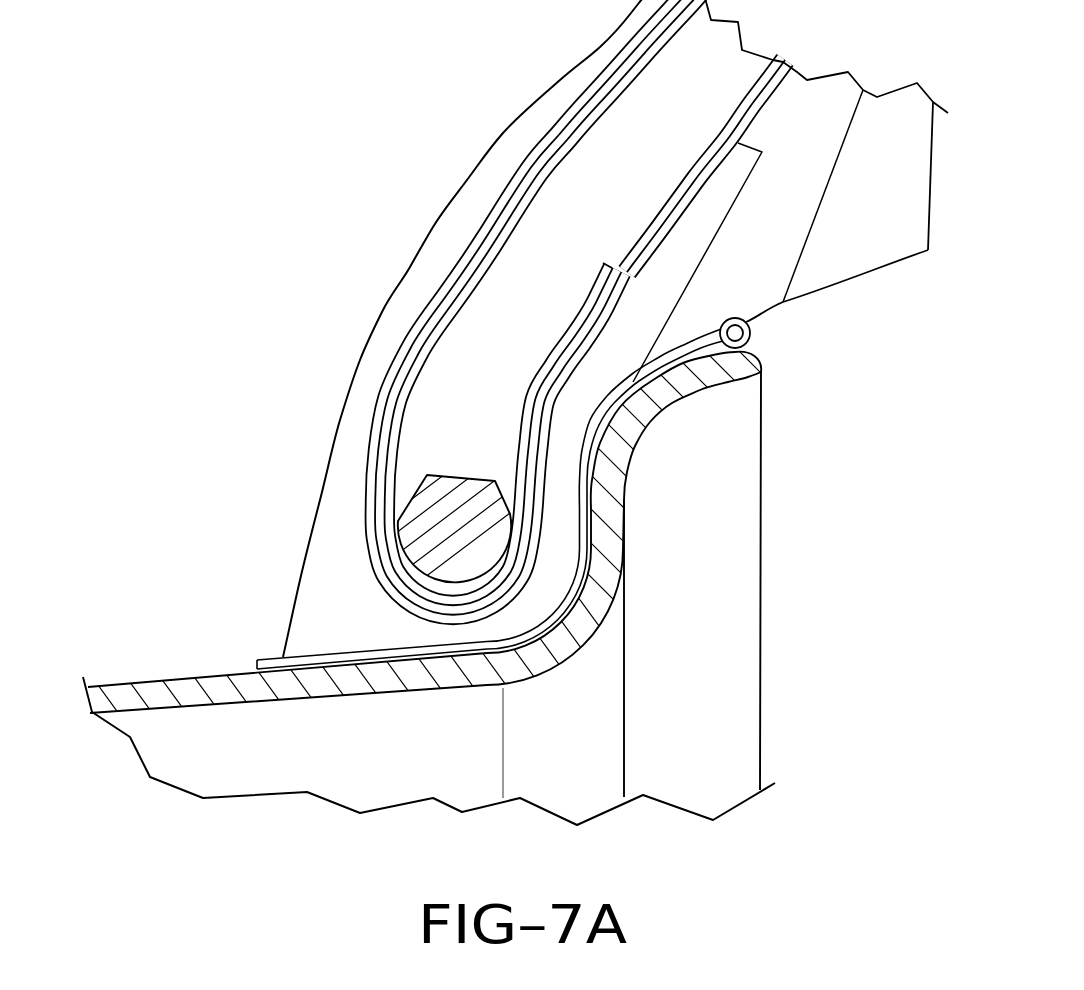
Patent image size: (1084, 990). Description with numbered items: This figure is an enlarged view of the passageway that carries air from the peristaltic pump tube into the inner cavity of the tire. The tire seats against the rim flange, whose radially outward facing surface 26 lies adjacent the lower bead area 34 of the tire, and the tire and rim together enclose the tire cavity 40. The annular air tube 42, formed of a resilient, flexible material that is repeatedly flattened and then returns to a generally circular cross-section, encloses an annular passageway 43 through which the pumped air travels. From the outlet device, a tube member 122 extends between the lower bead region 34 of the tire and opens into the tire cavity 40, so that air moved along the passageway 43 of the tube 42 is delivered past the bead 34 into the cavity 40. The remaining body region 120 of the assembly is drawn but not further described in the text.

The tire cavity 40 is at (230, 569).
The radially outward facing surface 26 is at (650, 372).
The bead area 34 is at (472, 470).
The annular air tube 42 is at (738, 318).
The annular passageway 43 is at (742, 336).
The rim flange body 120 is at (796, 200).
The tube member 122 is at (595, 524).